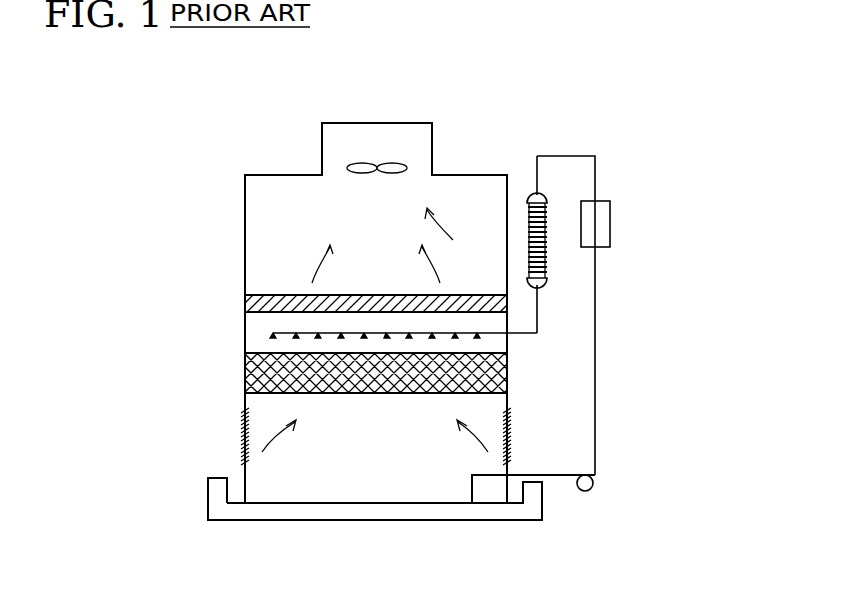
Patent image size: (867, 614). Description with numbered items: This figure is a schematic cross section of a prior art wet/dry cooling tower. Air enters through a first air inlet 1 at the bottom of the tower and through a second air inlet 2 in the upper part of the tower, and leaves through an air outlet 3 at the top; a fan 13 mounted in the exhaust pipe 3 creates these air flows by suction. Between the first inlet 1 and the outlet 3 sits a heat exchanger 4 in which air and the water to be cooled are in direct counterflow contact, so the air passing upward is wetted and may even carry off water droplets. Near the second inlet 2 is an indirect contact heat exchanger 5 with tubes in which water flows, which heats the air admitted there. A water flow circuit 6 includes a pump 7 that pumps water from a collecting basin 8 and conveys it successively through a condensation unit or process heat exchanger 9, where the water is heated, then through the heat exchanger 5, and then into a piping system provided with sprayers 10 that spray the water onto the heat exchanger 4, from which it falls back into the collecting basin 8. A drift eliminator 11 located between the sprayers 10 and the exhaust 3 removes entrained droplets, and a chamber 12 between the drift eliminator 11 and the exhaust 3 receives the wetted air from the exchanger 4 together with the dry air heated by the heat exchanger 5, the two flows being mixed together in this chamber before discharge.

The first air inlet 1 is at (245, 430).
The second air inlet 2 is at (507, 213).
The air outlet 3 is at (403, 123).
The heat exchanger 4 is at (380, 394).
The indirect contact heat exchanger 5 is at (548, 263).
The water flow circuit 6 is at (610, 443).
The pump 7 is at (588, 491).
The collecting basin 8 is at (492, 521).
The process heat exchanger 9 is at (610, 225).
The sprayers 10 is at (273, 333).
The drift eliminator 11 is at (265, 293).
The chamber 12 is at (272, 215).
The fan 13 is at (358, 163).